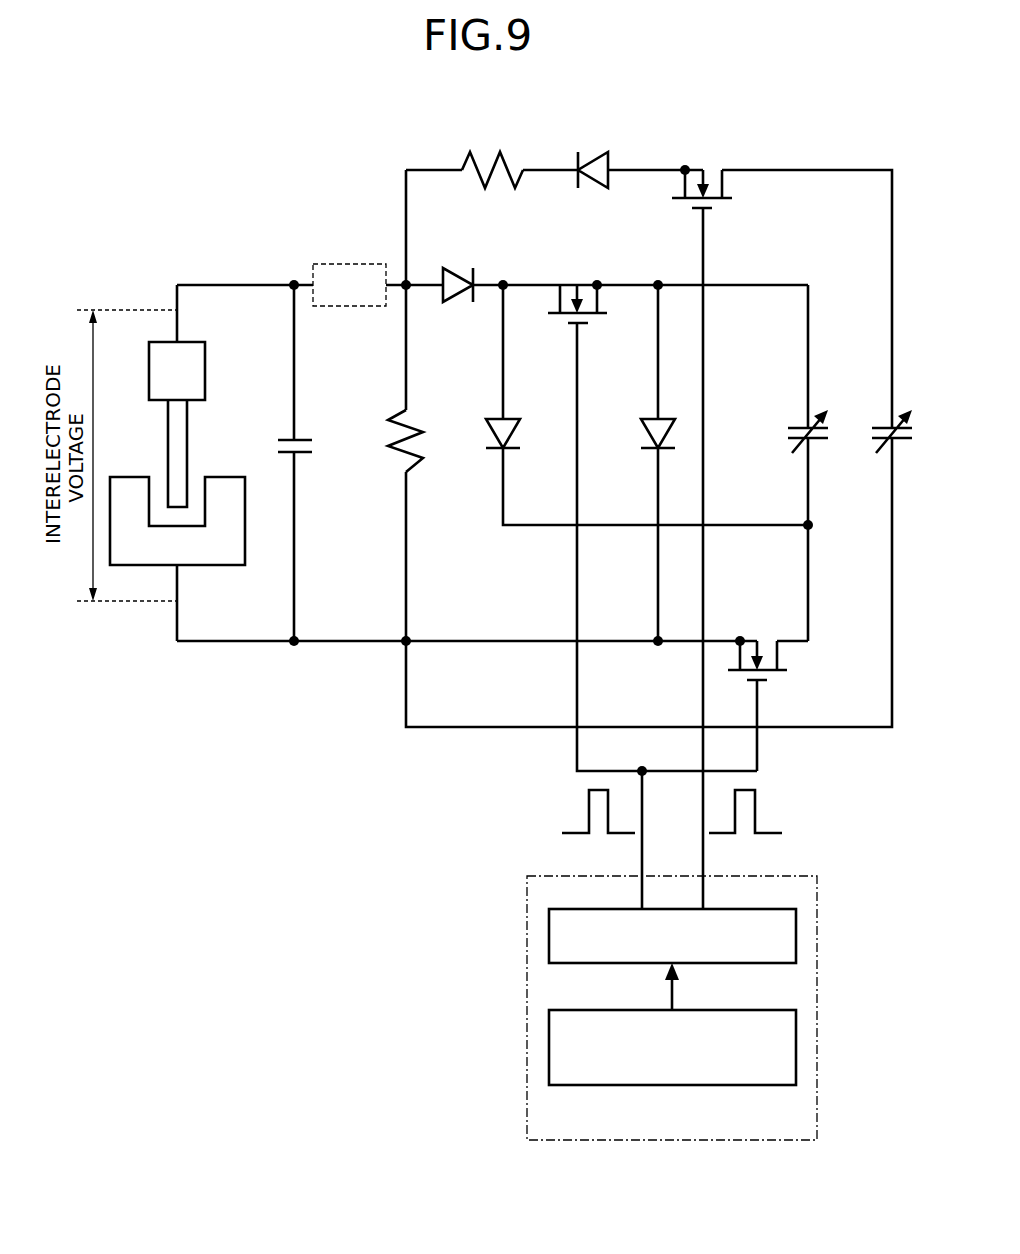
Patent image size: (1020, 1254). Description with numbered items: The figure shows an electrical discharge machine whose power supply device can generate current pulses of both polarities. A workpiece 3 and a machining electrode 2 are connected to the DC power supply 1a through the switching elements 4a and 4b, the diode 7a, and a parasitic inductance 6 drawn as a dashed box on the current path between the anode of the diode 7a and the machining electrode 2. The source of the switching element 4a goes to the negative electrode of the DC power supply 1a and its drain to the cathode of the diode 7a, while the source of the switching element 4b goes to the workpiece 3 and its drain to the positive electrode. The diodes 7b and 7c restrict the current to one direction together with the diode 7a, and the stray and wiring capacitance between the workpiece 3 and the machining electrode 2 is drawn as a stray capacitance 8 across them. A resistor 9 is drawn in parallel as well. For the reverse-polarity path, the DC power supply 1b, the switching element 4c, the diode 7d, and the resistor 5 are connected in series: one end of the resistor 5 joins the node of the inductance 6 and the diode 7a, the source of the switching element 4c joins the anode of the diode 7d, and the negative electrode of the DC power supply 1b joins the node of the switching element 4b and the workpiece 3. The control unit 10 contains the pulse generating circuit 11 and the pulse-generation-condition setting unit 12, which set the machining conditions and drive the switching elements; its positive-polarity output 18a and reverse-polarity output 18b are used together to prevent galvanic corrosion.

The DC power supply 1a is at (803, 428).
The DC power supply 1b is at (886, 428).
The machining electrode 2 is at (195, 340).
The workpiece 3 is at (216, 566).
The switching element 4a is at (584, 326).
The switching element 4b is at (770, 665).
The switching element 4c is at (712, 195).
The resistor 5 is at (464, 160).
The inductance 6 is at (350, 264).
The diode 7a is at (457, 302).
The diode 7b is at (510, 418).
The diode 7c is at (646, 418).
The diode 7d is at (603, 158).
The stray capacitance 8 is at (304, 440).
The resistor 9 is at (403, 470).
The control unit 10 is at (745, 880).
The pulse generating circuit 11 is at (800, 935).
The pulse-generation-condition setting unit 12 is at (800, 1045).
The pulse generating circuit output 18a is at (588, 810).
The pulse generating circuit output 18b is at (757, 810).